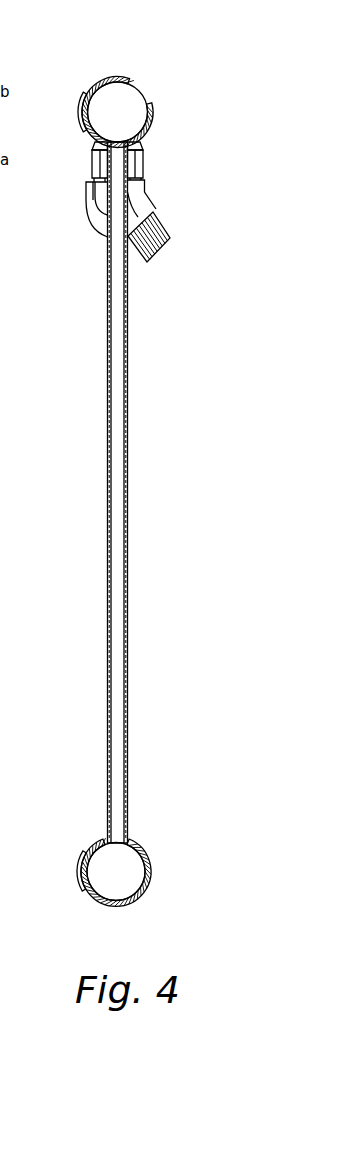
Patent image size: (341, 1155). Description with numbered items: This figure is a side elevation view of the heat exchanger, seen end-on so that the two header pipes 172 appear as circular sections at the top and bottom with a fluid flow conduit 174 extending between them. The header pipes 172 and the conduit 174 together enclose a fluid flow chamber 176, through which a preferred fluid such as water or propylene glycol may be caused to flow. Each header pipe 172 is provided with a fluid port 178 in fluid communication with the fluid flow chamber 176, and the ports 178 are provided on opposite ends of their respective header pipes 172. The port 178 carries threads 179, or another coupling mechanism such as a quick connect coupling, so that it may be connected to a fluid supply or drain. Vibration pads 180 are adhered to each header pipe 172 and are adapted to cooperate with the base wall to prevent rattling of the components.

The header pipe 172 is at (154, 118).
The fluid flow conduit 174 is at (107, 462).
The fluid flow chamber 176 is at (117, 412).
The fluid port 178 is at (152, 199).
The threads 179 is at (165, 225).
The vibration pad 180 is at (82, 103).